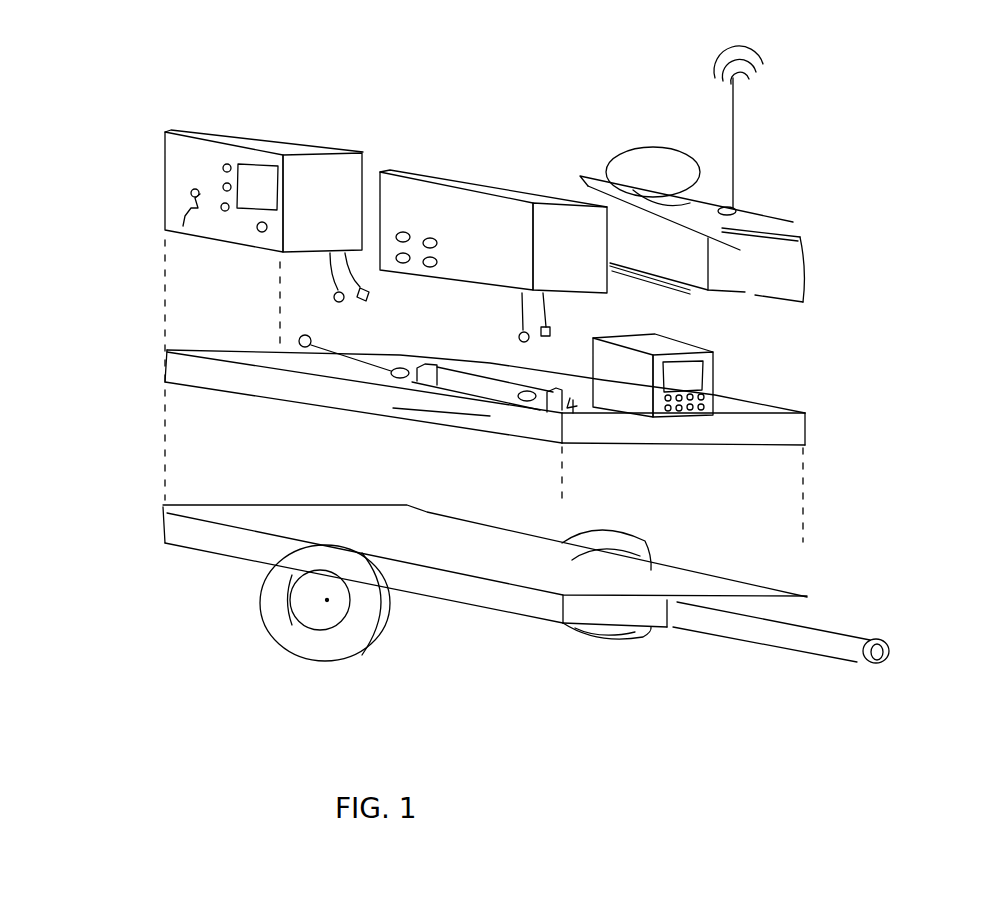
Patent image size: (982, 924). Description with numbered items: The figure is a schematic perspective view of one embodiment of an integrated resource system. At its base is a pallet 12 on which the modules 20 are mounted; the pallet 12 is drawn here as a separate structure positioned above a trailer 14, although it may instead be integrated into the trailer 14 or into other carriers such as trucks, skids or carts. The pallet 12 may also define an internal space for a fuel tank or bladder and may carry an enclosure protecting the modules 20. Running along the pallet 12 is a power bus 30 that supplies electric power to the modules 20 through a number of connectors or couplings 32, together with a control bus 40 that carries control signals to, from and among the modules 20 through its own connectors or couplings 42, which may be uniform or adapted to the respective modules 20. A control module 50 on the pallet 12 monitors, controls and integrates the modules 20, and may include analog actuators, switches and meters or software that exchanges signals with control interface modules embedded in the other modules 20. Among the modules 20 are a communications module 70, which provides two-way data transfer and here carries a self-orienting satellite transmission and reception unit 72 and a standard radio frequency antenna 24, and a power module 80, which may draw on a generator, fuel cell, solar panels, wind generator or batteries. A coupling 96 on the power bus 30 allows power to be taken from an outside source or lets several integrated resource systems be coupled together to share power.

The pallet 12 is at (805, 413).
The trailer 14 is at (155, 550).
The modules 20 is at (311, 140).
The antenna 24 is at (735, 132).
The power bus 30 is at (372, 362).
The connectors or couplings 32 is at (404, 363).
The control bus 40 is at (548, 400).
The connectors or couplings 42 is at (433, 392).
The control module 50 is at (717, 377).
The communication module 70 is at (792, 206).
The self-orienting satellite transmission and reception unit 72 is at (640, 148).
The power module 80 is at (493, 177).
The coupling 96 is at (297, 338).